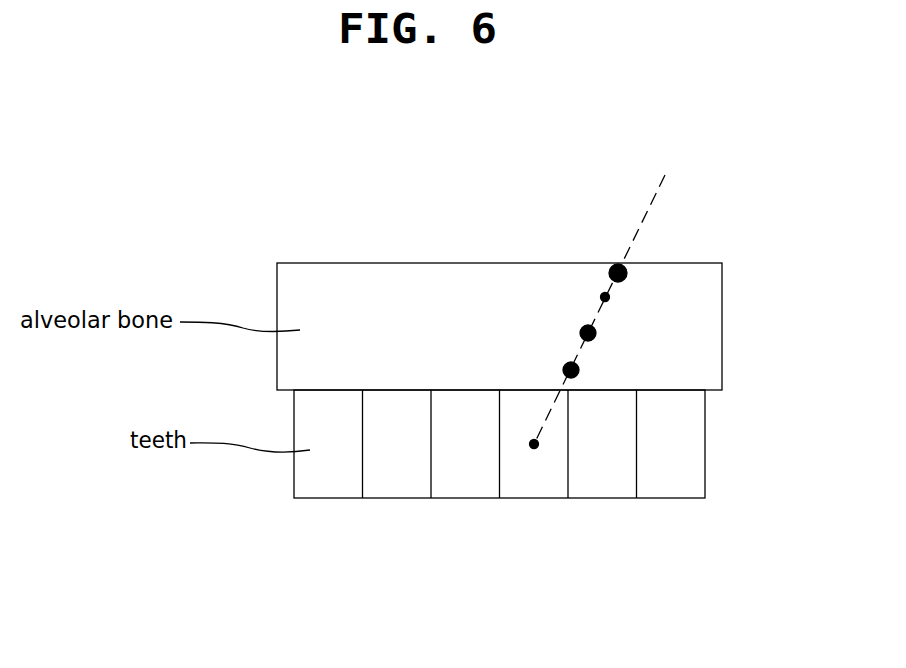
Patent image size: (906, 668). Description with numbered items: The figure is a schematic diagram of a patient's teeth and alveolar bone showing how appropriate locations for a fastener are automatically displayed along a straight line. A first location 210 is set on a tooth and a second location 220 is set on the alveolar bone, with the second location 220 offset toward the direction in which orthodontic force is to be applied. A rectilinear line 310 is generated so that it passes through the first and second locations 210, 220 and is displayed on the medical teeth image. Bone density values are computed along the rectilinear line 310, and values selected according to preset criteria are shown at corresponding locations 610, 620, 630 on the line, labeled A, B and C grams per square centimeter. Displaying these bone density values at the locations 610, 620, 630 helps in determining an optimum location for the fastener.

The first location 210 is at (534, 449).
The second location 220 is at (605, 292).
The rectilinear line 310 is at (654, 198).
The location 610 is at (626, 266).
The location 620 is at (581, 334).
The location 630 is at (564, 371).